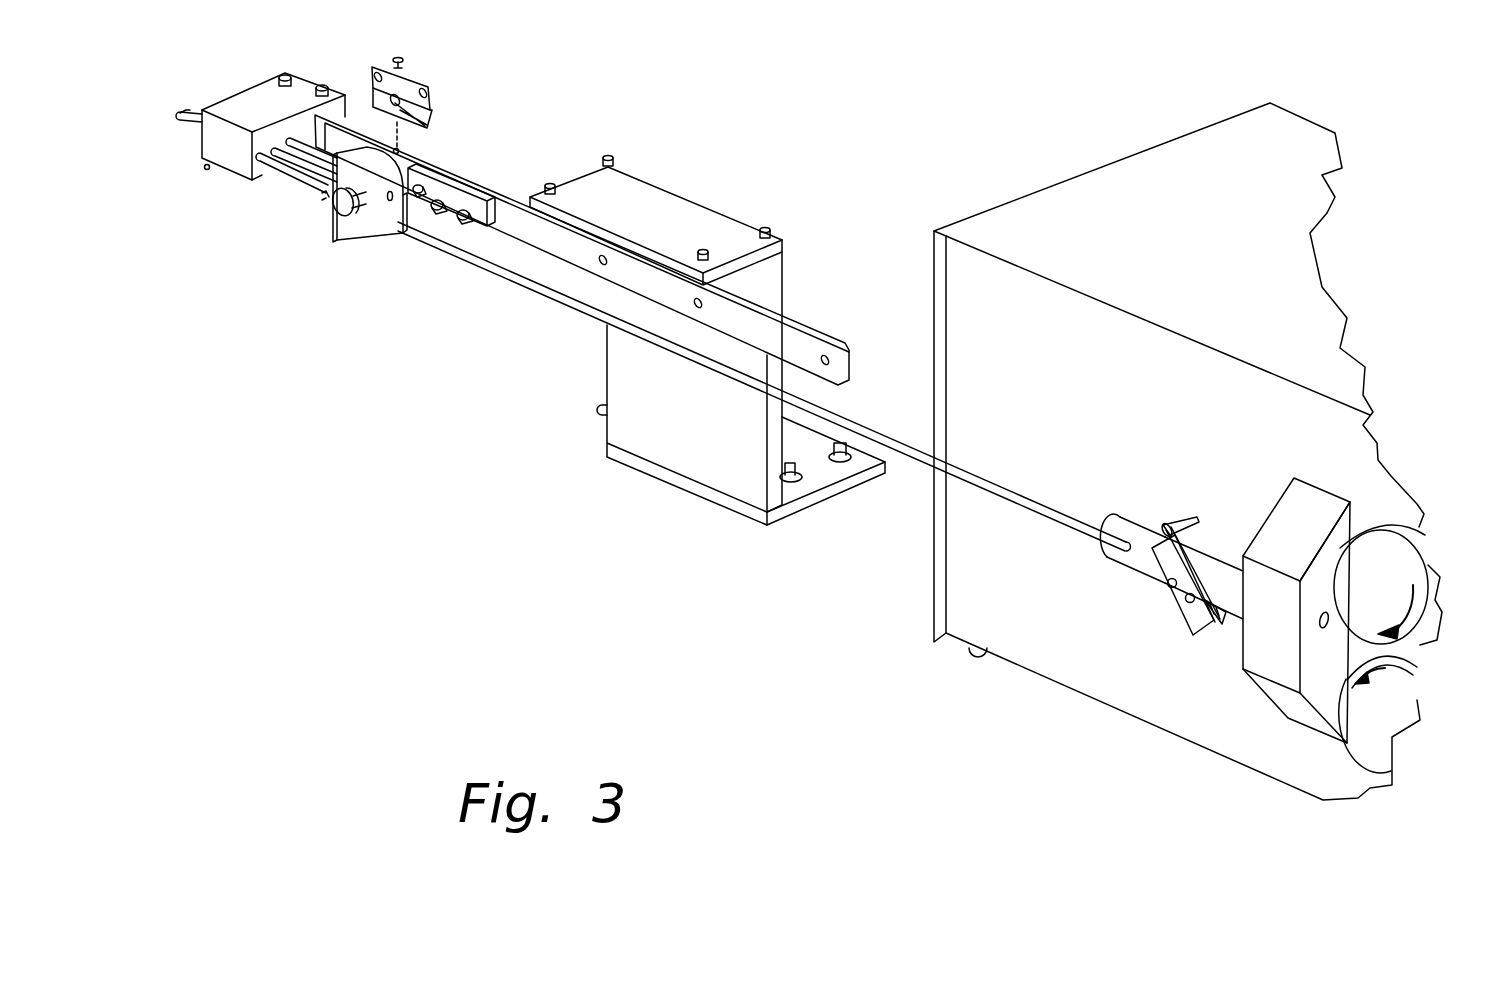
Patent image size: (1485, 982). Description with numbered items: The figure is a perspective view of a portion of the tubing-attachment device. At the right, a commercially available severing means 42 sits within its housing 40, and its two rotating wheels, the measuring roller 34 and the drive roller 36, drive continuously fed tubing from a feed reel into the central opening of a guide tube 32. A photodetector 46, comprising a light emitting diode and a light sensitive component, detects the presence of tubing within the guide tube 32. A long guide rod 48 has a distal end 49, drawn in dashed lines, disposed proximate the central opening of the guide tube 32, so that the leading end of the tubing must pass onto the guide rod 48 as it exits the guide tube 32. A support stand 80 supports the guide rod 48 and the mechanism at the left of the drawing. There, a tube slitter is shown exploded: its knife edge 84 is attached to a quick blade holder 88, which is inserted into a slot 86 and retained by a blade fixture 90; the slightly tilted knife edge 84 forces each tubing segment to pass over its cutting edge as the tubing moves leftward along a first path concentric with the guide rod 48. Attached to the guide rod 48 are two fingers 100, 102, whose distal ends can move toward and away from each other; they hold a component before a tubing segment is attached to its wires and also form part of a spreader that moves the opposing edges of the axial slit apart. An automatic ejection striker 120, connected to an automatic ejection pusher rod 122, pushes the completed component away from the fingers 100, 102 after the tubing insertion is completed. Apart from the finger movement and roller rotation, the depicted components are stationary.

The guide tube 32 is at (1212, 563).
The measuring roller 34 is at (1394, 561).
The drive roller 36 is at (1390, 722).
The severing means housing 40 is at (1083, 184).
The severing means 42 is at (1243, 668).
The photodetector 46 is at (1155, 548).
The guide rod 48 is at (918, 466).
The distal end 49 is at (1132, 548).
The support stand 80 is at (604, 430).
The knife edge 84 is at (432, 122).
The slot 86 is at (437, 164).
The quick blade holder 88 is at (405, 85).
The blade fixture 90 is at (388, 208).
The finger 100 is at (180, 116).
The finger 102 is at (188, 110).
The automatic ejection striker 120 is at (197, 138).
The automatic ejection pusher rod 122 is at (206, 171).